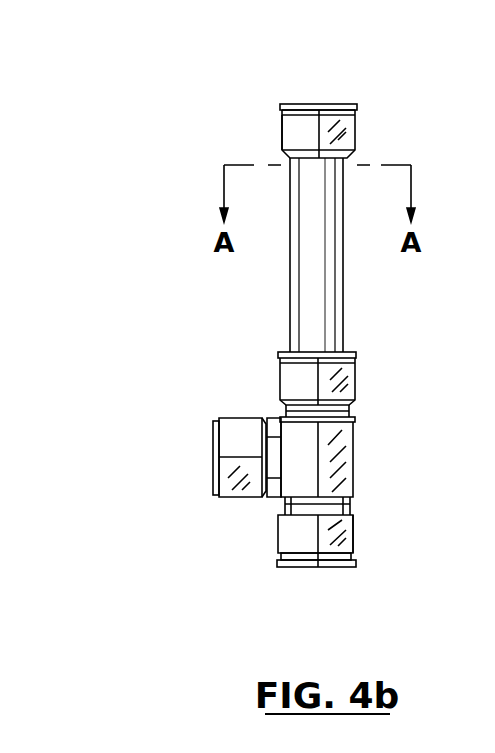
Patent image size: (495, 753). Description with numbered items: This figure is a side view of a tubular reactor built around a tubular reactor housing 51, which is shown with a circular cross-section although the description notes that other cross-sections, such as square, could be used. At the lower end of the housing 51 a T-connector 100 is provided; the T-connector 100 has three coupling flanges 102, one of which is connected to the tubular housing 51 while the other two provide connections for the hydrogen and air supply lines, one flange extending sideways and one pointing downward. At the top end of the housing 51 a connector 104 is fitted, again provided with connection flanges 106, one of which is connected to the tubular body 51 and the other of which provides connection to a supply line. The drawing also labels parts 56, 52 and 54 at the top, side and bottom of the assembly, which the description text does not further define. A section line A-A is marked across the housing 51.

The end cap 56 is at (314, 104).
The connection flange 106 is at (358, 112).
The connector 104 is at (290, 134).
The tubular reactor housing 51 is at (329, 296).
The coupling flange 102 is at (286, 352).
The T-connector 100 is at (356, 447).
The side connector 52 is at (218, 452).
The bottom nut 54 is at (355, 527).